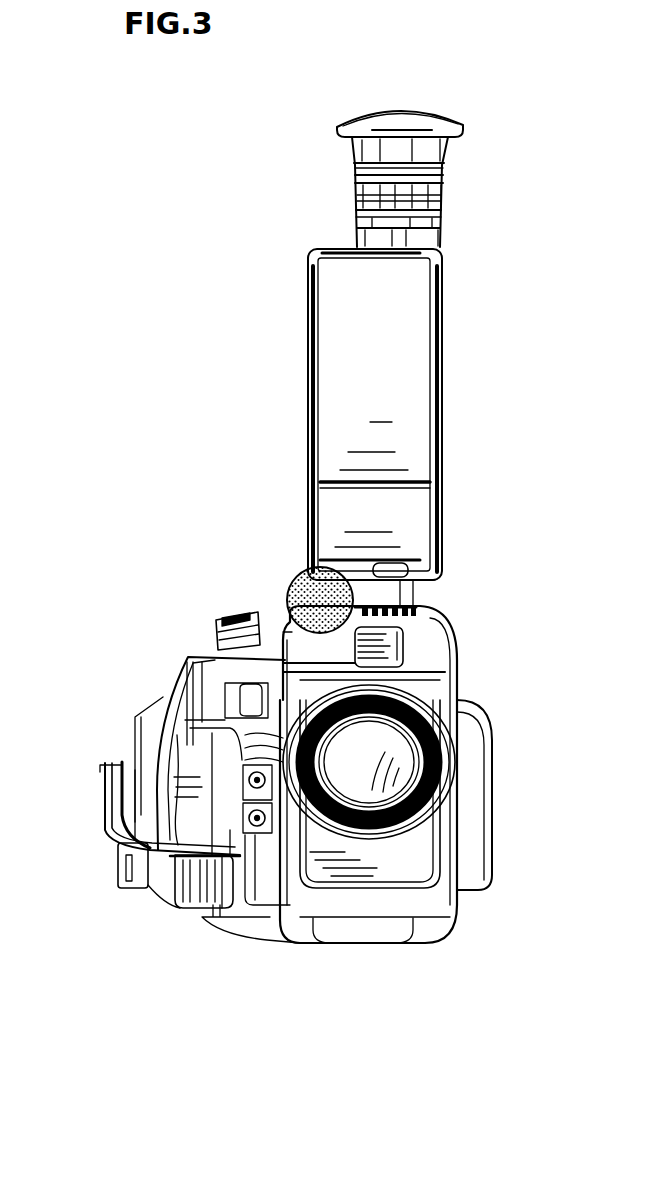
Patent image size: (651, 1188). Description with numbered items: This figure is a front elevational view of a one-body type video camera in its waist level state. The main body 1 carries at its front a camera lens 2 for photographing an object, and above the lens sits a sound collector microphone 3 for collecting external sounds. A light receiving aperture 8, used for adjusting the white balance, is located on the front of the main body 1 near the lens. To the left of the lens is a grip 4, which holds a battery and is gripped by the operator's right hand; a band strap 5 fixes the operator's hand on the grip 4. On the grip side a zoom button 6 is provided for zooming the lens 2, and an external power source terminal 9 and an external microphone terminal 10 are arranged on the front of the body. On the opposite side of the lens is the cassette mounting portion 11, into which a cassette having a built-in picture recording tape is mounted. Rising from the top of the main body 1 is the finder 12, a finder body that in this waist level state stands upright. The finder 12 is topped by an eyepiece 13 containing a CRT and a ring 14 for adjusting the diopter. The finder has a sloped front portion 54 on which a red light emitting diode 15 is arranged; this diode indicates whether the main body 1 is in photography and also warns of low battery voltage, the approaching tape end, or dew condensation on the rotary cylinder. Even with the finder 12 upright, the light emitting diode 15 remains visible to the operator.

The main body 1 is at (460, 609).
The camera lens 2 is at (385, 740).
The sound collector microphone 3 is at (305, 573).
The grip 4 is at (178, 672).
The band strap 5 is at (115, 845).
The zoom button 6 is at (225, 622).
The light receiving aperture 8 is at (403, 660).
The external power source terminal 9 is at (250, 821).
The external microphone terminal 10 is at (249, 783).
The cassette mounting portion 11 is at (471, 727).
The finder body 12 is at (300, 405).
The eyepiece 13 is at (418, 128).
The ring 14 is at (432, 198).
The red light emitting diode 15 is at (403, 560).
The sloped front portion 54 is at (407, 505).